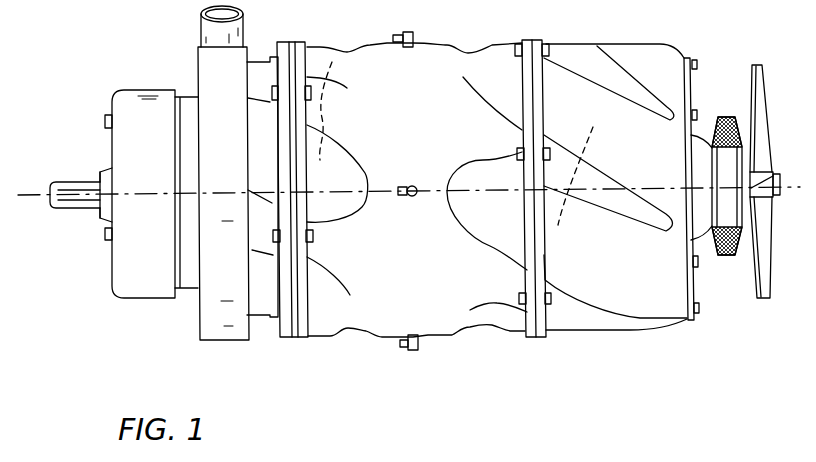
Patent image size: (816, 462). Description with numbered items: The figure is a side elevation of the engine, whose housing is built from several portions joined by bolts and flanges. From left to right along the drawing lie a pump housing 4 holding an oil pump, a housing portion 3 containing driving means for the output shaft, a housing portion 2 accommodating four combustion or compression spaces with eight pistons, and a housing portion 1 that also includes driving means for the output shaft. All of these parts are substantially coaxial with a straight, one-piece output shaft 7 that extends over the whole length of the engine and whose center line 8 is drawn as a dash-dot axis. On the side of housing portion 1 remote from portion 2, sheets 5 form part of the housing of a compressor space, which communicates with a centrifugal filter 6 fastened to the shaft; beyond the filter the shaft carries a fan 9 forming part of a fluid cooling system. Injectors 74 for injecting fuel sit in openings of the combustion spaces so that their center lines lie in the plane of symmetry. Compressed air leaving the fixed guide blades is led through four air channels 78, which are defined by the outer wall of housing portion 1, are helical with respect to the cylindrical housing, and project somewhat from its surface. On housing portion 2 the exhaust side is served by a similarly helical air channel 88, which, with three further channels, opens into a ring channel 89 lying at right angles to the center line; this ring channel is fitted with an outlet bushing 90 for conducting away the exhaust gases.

The housing portion 1 is at (653, 338).
The housing portion 2 is at (382, 345).
The housing portion 3 is at (265, 325).
The pump housing 4 is at (143, 300).
The sheets 5 is at (692, 89).
The centrifugal filter 6 is at (740, 116).
The output shaft 7 is at (78, 182).
The center line 8 is at (98, 210).
The fan 9 is at (757, 277).
The injectors 74 is at (414, 33).
The air channels 78 is at (601, 188).
The air channel 88 is at (417, 187).
The ring channel 89 is at (203, 65).
The outlet bushing 90 is at (243, 32).